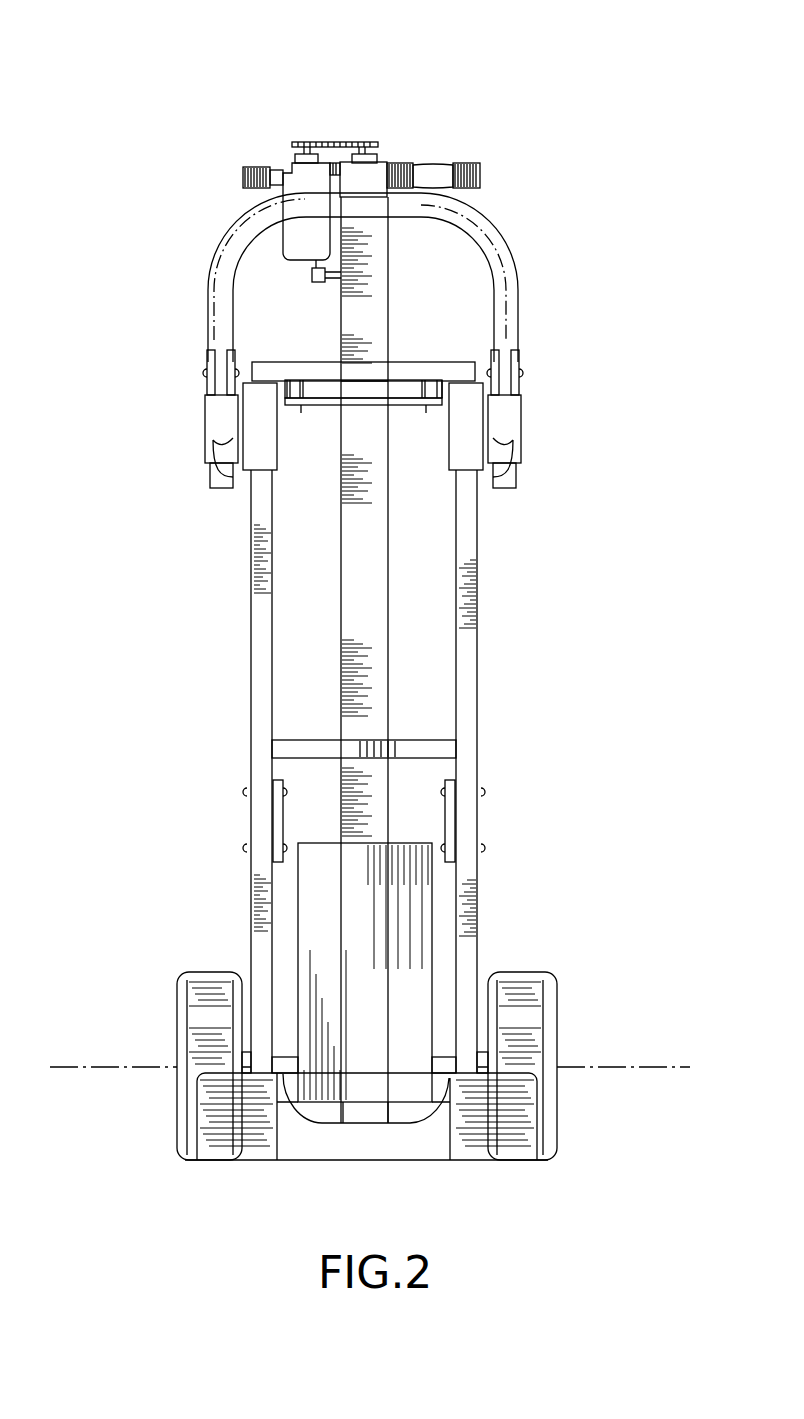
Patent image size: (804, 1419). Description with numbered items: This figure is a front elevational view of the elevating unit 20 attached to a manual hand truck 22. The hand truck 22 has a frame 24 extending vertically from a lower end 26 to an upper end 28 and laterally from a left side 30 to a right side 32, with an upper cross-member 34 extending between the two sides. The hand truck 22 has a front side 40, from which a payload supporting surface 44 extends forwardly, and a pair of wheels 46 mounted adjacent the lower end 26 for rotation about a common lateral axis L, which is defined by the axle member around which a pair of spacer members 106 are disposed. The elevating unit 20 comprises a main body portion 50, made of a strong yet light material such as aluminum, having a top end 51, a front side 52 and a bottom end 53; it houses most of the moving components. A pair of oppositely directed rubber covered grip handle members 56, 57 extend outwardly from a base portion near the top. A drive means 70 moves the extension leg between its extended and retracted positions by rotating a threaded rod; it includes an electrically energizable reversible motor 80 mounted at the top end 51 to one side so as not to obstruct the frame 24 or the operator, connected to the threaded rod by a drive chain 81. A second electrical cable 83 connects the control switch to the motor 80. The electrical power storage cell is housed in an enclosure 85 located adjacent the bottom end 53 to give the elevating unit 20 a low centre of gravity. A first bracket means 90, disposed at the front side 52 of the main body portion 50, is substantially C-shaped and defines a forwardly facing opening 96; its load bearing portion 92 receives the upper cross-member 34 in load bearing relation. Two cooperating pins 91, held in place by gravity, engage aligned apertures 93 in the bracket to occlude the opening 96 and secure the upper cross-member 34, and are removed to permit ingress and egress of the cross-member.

The elevating unit 20 is at (450, 70).
The manual hand truck 22 is at (572, 548).
The frame 24 is at (373, 771).
The lower end 26 is at (467, 1062).
The upper end 28 is at (457, 214).
The left side 30 is at (470, 655).
The right side 32 is at (260, 705).
The upper cross-member 34 is at (445, 378).
The front side 40 is at (445, 750).
The payload supporting surface 44 is at (240, 1145).
The wheels 46 is at (213, 985).
The main body portion 50 is at (365, 530).
The top end 51 is at (385, 143).
The front side 52 is at (358, 625).
The bottom end 53 is at (362, 1125).
The grip handle member 56 is at (458, 165).
The grip handle member 57 is at (277, 173).
The drive means 70 is at (280, 64).
The electrically energizable reversible motor 80 is at (292, 235).
The drive chain 81 is at (347, 140).
The second electrical cable 83 is at (325, 288).
The enclosure 85 is at (420, 867).
The first bracket means 90 is at (348, 396).
The pins 91 is at (302, 414).
The load bearing portion 92 is at (405, 400).
The apertures 93 is at (303, 398).
The forwardly facing opening 96 is at (370, 386).
The spacer members 106 is at (293, 1066).
The common lateral axis L is at (652, 1065).